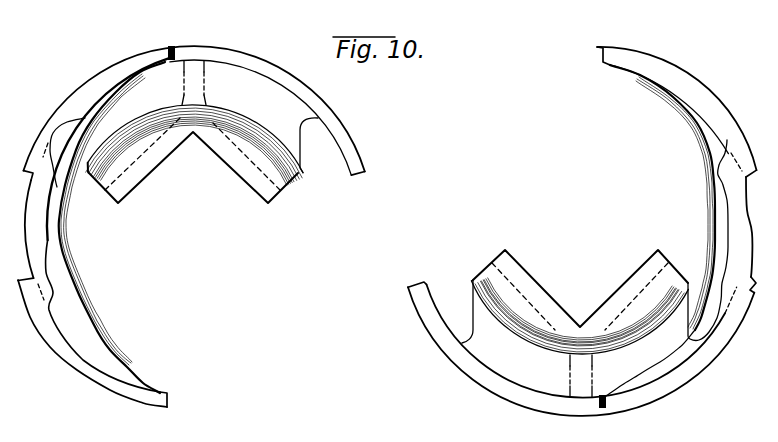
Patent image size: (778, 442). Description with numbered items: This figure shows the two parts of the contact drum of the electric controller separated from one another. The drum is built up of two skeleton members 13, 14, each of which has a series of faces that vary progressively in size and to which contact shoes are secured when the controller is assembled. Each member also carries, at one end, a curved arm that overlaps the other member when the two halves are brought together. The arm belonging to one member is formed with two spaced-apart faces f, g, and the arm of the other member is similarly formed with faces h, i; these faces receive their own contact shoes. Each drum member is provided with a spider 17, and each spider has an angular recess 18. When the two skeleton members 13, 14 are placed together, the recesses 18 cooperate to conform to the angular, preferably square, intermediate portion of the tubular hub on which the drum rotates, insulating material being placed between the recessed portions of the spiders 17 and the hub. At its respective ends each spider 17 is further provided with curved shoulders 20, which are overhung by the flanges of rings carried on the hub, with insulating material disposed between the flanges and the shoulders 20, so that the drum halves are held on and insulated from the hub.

The skeleton member 13 is at (194, 212).
The skeleton member 14 is at (582, 231).
The spider 17 is at (408, 229).
The angular recess 18 is at (388, 224).
The curved shoulder 20 is at (298, 182).
The face f is at (39, 133).
The face g is at (92, 342).
The face h is at (734, 106).
The face i is at (451, 383).